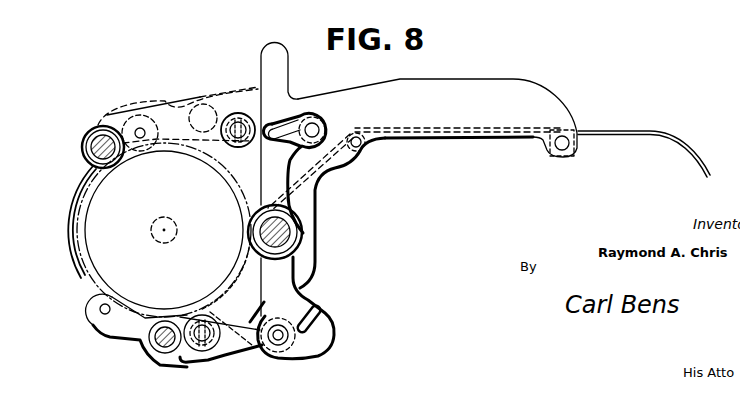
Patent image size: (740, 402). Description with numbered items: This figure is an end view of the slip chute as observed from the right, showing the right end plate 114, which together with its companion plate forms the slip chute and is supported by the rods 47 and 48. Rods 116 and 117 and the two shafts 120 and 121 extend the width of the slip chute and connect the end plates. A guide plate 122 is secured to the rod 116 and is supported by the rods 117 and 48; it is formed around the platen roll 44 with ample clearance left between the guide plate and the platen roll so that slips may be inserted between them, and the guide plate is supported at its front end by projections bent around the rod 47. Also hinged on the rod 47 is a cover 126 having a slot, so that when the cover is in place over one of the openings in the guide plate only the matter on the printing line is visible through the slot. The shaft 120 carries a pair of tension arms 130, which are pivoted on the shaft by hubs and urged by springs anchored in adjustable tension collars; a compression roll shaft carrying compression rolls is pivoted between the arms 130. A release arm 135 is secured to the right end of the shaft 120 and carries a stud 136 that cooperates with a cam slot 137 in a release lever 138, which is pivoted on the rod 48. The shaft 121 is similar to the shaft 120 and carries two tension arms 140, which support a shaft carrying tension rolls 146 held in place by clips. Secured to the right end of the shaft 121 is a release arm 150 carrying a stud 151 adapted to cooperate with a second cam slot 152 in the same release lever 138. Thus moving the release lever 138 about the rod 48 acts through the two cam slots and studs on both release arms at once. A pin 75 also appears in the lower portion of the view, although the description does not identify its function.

The platen roll 44 is at (146, 230).
The rod 47 is at (100, 133).
The rod 48 is at (295, 232).
The pin 75 is at (162, 355).
The end plate 114 is at (437, 109).
The rod 116 is at (567, 155).
The rod 117 is at (374, 151).
The shaft 120 is at (257, 180).
The shaft 121 is at (202, 352).
The guide plate 122 is at (489, 159).
The cover 126 is at (61, 222).
The tension arm 130 is at (178, 113).
The release arm 135 is at (237, 146).
The stud 136 is at (327, 124).
The cam slot 137 is at (294, 161).
The release lever 138 is at (342, 213).
The tension arm 140 is at (133, 332).
The tension roll 146 is at (71, 309).
The release arm 150 is at (222, 341).
The stud 151 is at (278, 326).
The cam slot 152 is at (301, 312).